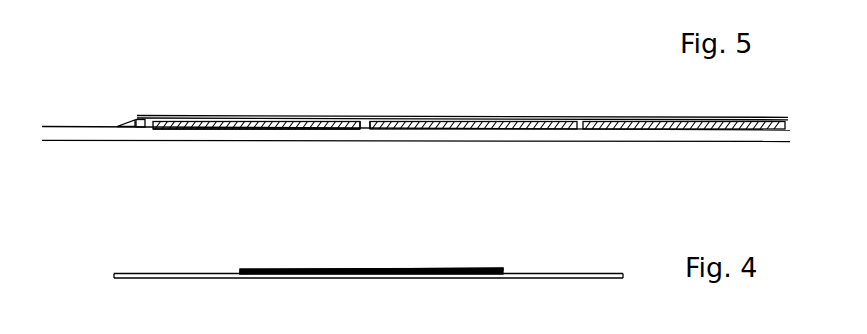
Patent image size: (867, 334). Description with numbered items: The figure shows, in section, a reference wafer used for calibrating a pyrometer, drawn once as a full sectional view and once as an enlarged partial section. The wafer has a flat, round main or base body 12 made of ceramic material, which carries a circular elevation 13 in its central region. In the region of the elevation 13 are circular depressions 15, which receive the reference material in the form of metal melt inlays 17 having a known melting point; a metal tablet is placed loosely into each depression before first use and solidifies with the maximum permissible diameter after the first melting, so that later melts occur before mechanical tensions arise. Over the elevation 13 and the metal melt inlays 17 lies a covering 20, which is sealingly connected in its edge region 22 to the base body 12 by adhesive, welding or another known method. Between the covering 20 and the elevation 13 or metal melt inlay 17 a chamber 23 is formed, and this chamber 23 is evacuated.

In FIG. 5, the base body 12 is at (75, 136).
In FIG. 4, the base body 12 is at (161, 277).
In FIG. 5, the elevation 13 is at (141, 122).
In FIG. 5, the depressions 15 is at (168, 128).
In FIG. 5, the metal melt inlays 17 is at (243, 121).
In FIG. 4, the metal melt inlays 17 is at (383, 270).
In FIG. 5, the covering 20 is at (307, 117).
In FIG. 5, the edge region 22 is at (118, 123).
In FIG. 5, the chamber 23 is at (370, 117).